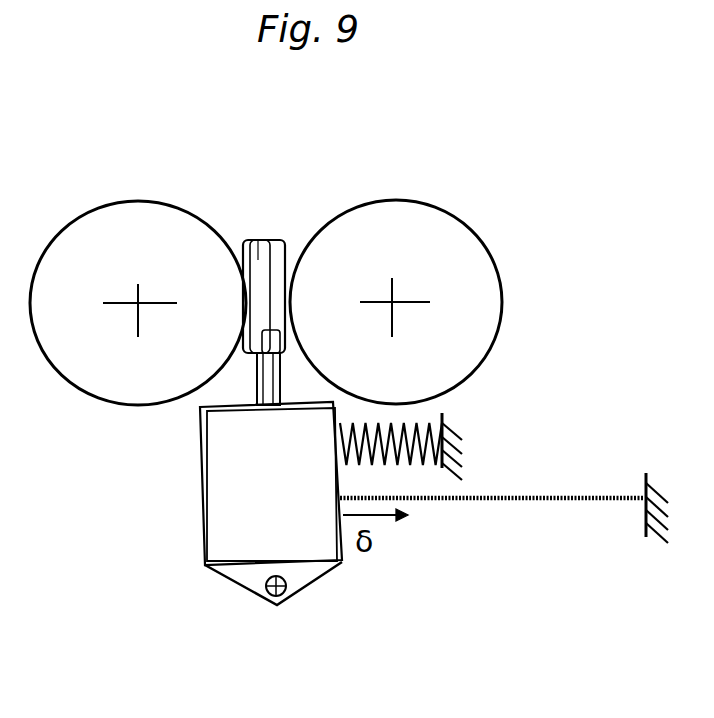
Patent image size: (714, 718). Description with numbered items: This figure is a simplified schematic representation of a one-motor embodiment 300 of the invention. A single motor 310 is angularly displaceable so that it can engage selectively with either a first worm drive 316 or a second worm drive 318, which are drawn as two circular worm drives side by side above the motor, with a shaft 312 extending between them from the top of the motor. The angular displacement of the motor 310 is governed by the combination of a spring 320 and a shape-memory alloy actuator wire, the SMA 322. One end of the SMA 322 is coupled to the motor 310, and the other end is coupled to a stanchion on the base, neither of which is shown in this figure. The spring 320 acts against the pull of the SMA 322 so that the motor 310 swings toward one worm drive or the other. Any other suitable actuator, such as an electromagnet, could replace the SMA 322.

The one-motor embodiment 300 is at (530, 594).
The motor 310 is at (228, 486).
The shaft 312 is at (258, 246).
The first worm drive 316 is at (113, 212).
The second worm drive 318 is at (400, 220).
The spring 320 is at (418, 430).
The SMA actuator wire 322 is at (545, 500).